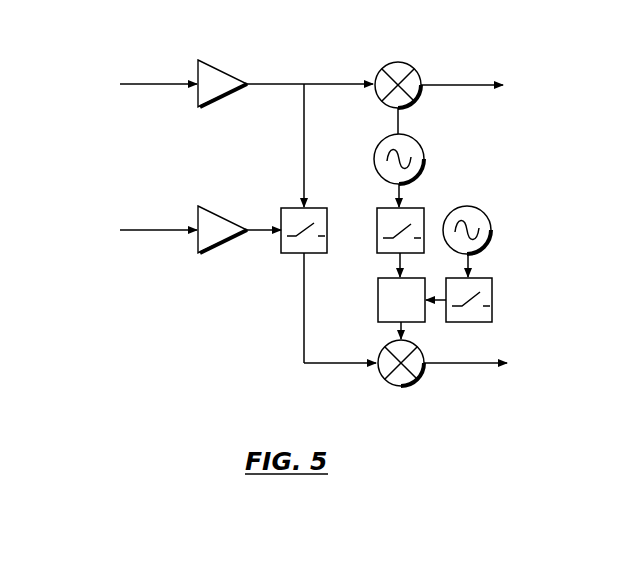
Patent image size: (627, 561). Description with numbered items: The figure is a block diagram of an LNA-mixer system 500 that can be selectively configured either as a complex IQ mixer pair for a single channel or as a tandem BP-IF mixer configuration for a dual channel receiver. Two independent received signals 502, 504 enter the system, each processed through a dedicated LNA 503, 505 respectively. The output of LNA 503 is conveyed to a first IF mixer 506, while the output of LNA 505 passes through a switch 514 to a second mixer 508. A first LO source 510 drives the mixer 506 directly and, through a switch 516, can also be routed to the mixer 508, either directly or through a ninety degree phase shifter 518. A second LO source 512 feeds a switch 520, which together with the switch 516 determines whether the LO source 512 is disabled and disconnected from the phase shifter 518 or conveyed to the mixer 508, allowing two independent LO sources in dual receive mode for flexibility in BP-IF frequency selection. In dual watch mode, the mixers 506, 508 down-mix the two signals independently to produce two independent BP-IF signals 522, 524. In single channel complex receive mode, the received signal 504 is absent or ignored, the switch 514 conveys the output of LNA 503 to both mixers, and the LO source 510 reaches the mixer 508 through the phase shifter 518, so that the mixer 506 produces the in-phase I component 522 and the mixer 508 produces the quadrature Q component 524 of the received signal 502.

The LNA-mixer system 500 is at (73, 300).
The received signal 502 is at (152, 82).
The LNA 503 is at (202, 60).
The received signal 504 is at (152, 229).
The LNA 505 is at (205, 207).
The first IF mixer 506 is at (420, 72).
The second mixer 508 is at (403, 388).
The first LO source 510 is at (425, 165).
The second LO source 512 is at (492, 237).
The switch 514 is at (290, 253).
The switch 516 is at (377, 215).
The phase shifter 518 is at (378, 312).
The switch 520 is at (492, 297).
The BP-IF signal 522 is at (478, 84).
The BP-IF signal 524 is at (478, 365).